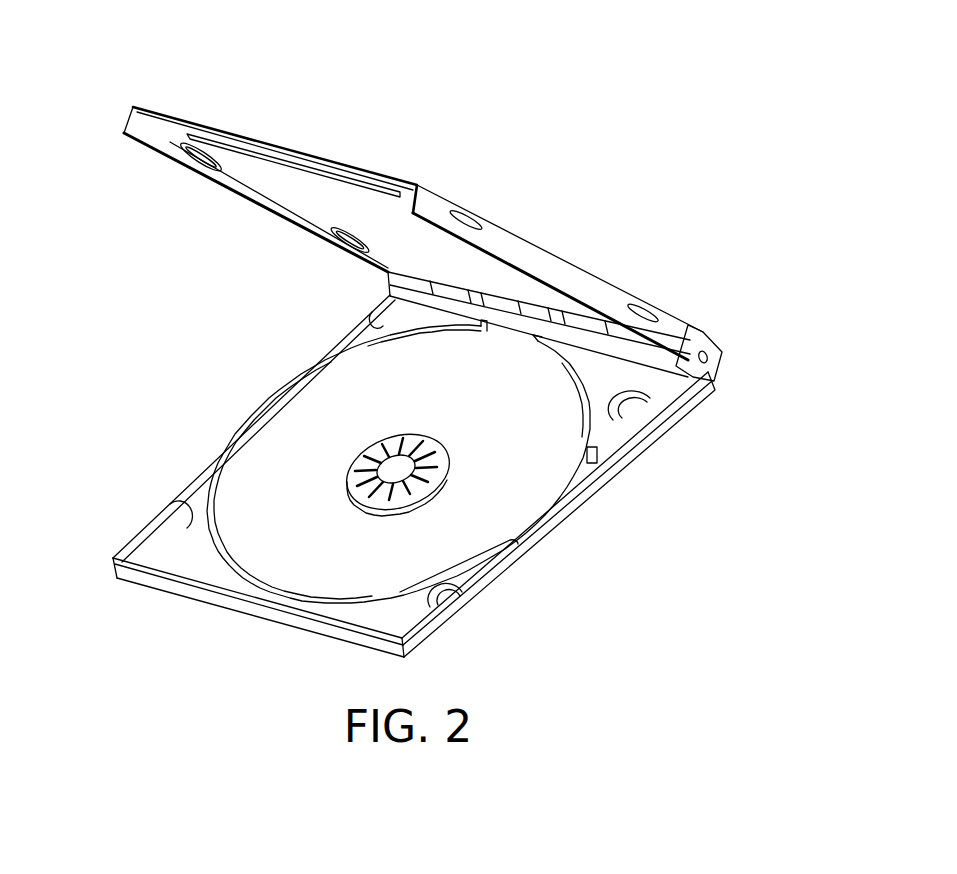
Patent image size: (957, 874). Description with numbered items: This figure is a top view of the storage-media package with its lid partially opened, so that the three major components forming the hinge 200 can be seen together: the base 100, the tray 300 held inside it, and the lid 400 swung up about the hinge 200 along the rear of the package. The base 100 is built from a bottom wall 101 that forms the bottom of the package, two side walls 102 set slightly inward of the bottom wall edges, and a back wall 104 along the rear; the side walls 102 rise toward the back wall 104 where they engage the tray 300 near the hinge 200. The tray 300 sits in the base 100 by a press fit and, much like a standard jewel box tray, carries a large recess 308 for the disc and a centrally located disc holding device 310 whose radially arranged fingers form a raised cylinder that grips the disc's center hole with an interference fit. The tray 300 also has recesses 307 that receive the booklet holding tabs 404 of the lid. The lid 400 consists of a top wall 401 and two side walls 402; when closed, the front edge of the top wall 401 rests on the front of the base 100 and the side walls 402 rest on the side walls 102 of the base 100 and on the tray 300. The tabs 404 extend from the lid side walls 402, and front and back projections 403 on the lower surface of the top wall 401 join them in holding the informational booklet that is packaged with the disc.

The base 100 is at (416, 476).
The bottom wall 101 is at (548, 526).
The side walls 102 is at (200, 473).
The back wall 104 is at (696, 332).
The hinge 200 is at (625, 305).
The tray 300 is at (416, 479).
The recesses 307 is at (365, 318).
The recess 308 is at (333, 428).
The disc holding device 310 is at (447, 477).
The lid 400 is at (388, 196).
The top wall 401 is at (350, 205).
The side walls 402 is at (197, 167).
The front and back projections 403 is at (307, 163).
The tabs 404 is at (185, 148).